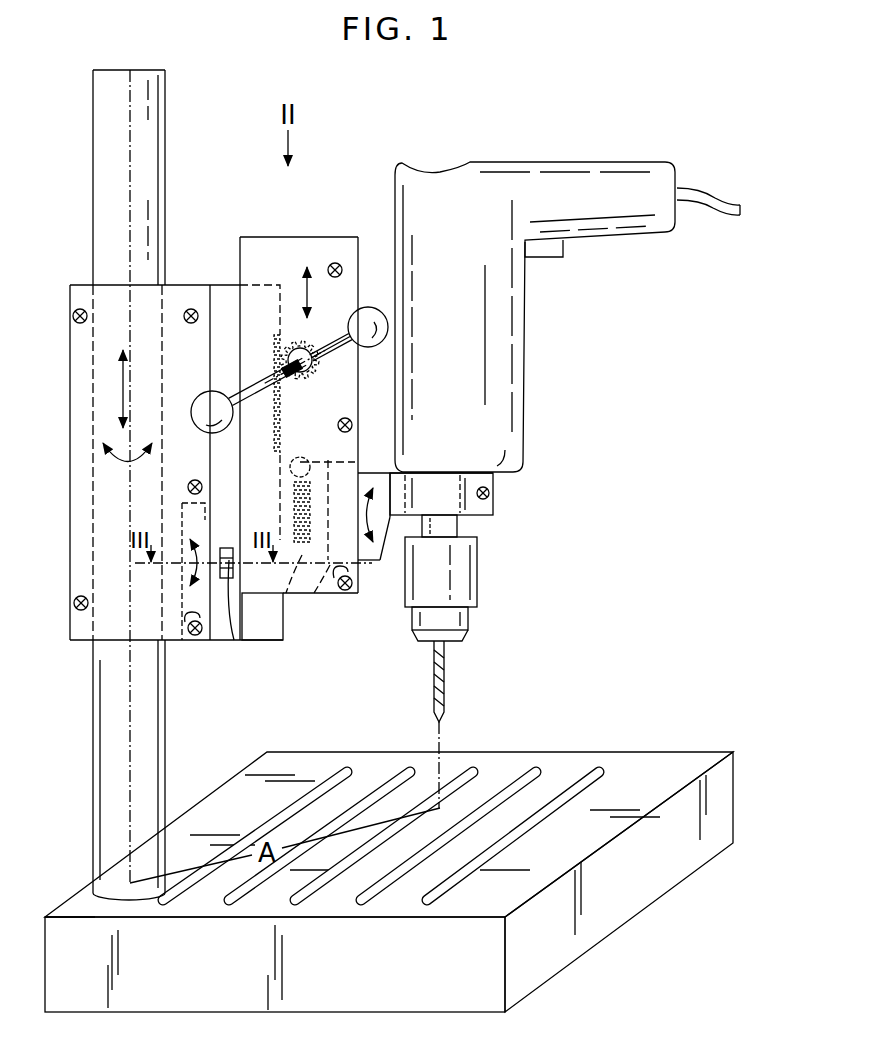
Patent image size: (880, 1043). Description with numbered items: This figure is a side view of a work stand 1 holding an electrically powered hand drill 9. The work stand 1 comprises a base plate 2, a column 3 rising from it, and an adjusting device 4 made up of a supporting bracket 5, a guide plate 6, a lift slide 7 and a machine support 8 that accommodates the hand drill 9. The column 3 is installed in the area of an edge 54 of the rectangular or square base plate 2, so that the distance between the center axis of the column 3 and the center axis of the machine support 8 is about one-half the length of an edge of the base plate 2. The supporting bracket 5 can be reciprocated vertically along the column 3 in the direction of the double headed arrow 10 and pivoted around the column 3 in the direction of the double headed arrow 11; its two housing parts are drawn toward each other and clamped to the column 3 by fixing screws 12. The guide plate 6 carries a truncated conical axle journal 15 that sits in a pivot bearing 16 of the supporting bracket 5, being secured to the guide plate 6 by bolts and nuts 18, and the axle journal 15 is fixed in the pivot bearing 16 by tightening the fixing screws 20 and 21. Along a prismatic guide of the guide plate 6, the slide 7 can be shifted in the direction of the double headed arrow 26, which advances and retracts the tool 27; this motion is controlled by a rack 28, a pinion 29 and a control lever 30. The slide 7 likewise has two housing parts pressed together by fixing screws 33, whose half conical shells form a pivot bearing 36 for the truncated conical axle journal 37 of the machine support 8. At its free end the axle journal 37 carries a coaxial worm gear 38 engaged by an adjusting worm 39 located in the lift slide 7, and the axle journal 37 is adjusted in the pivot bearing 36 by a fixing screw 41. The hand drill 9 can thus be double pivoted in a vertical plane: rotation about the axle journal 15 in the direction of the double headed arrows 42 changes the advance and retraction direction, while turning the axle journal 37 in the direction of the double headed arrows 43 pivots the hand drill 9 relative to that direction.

The work stand 1 is at (588, 527).
The base plate 2 is at (662, 768).
The column 3 is at (108, 767).
The adjusting device 4 is at (318, 210).
The supporting bracket 5 is at (118, 630).
The guide plate 6 is at (238, 642).
The lift slide 7 is at (306, 580).
The machine support 8 is at (372, 565).
The hand drill 9 is at (525, 416).
The double headed arrow 10 is at (123, 383).
The double headed arrow 11 is at (100, 462).
The fixing screws 12 is at (80, 308).
The axle journal 15 is at (205, 514).
The pivot bearing 16 is at (190, 625).
The nuts 18 is at (227, 580).
The fixing screws 20 is at (188, 488).
The fixing screws 21 is at (197, 636).
The double headed arrow 26 is at (303, 262).
The tool 27 is at (447, 687).
The rack 28 is at (272, 440).
The pinion 29 is at (315, 382).
The control lever 30 is at (342, 330).
The fixing screws 33 is at (336, 262).
The pivot bearing 36 is at (340, 593).
The axle journal 37 is at (333, 578).
The worm gear 38 is at (262, 616).
The adjusting worm 39 is at (305, 462).
The fixing screw 41 is at (352, 596).
The double headed arrows 42 is at (185, 578).
The double headed arrows 43 is at (376, 540).
The edge 54 is at (83, 895).